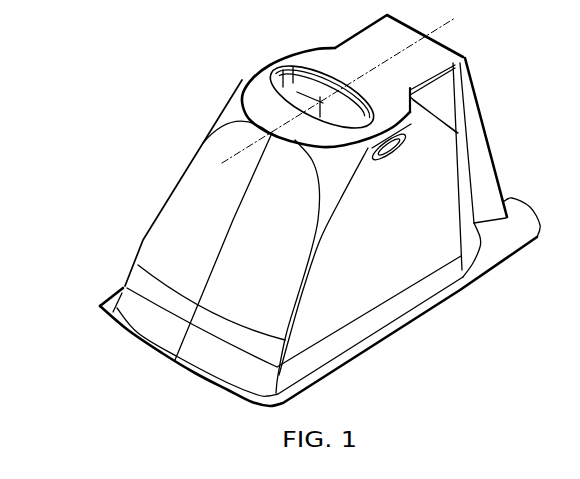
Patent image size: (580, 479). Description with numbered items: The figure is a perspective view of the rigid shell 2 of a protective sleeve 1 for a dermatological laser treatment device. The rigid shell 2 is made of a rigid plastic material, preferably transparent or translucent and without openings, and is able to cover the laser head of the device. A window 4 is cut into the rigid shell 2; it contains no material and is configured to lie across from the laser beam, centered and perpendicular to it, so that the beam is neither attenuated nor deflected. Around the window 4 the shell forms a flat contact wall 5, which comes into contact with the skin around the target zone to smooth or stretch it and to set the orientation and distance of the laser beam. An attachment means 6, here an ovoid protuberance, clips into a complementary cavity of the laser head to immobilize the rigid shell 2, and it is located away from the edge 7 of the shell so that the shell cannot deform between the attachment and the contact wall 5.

The protective sleeve 1 is at (292, 209).
The rigid shell 2 is at (292, 209).
The window 4 is at (292, 72).
The contact wall 5 is at (432, 62).
The attachment means 6 is at (398, 152).
The edge 7 is at (105, 303).